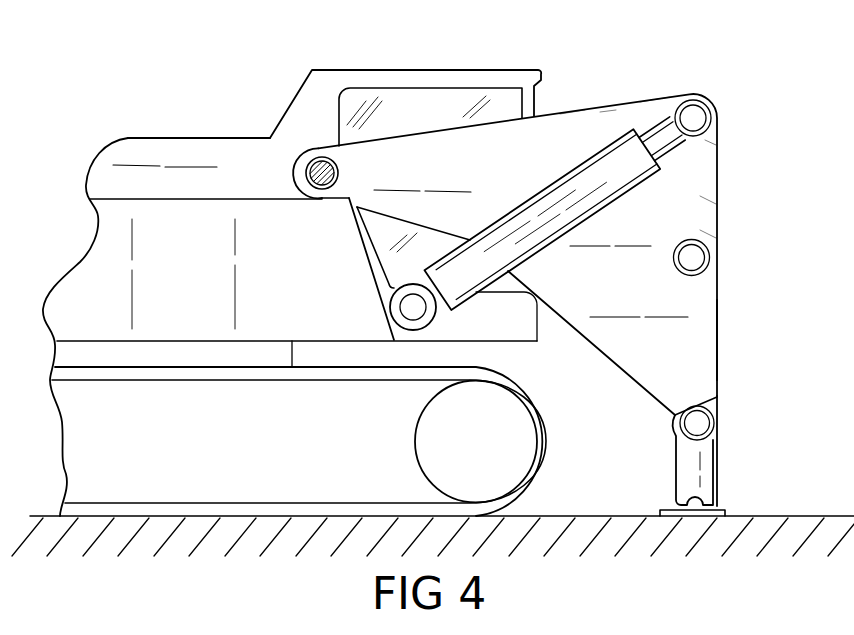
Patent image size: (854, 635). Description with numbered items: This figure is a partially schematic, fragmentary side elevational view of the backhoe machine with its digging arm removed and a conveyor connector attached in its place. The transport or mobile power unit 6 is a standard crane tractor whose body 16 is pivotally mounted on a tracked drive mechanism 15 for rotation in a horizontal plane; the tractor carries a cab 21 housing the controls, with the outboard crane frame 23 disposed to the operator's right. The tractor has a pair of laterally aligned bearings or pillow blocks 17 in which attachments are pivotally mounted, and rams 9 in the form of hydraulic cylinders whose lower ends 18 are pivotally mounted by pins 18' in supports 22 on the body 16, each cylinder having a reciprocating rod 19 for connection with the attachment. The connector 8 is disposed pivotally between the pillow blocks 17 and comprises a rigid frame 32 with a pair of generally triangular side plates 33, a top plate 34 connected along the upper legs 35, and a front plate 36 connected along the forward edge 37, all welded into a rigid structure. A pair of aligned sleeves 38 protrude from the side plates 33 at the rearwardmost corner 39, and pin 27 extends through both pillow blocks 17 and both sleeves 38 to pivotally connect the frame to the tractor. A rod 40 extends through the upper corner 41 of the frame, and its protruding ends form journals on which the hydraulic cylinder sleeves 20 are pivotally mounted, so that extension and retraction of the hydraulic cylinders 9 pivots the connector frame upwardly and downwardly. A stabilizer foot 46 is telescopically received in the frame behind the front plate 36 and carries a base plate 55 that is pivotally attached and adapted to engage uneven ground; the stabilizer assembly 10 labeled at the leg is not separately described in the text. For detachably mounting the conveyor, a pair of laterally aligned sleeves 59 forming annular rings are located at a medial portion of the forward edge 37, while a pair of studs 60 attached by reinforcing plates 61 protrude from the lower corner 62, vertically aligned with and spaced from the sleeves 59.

The transport or mobile power unit 6 is at (351, 66).
The connector 8 is at (571, 128).
The rams 9 is at (539, 208).
The support leg 10 is at (716, 465).
The tracked drive mechanism 15 is at (545, 429).
The body 16 is at (203, 155).
The bearings or pillow blocks 17 is at (299, 195).
The lower ends 18 is at (441, 309).
The pins 18' is at (431, 294).
The reciprocating rod 19 is at (656, 150).
The hydraulic cylinder sleeves 20 is at (716, 110).
The cab 21 is at (404, 98).
The supports 22 is at (391, 289).
The outboard crane frame 23 is at (354, 320).
The pin 27 is at (307, 172).
The rigid frame 32 is at (608, 117).
The side plates 33 is at (705, 234).
The top plate 34 is at (655, 100).
The upper legs 35 is at (432, 148).
The front plate 36 is at (720, 339).
The forward edge 37 is at (703, 200).
The sleeves 38 is at (338, 173).
The rearwardmost corner 39 is at (337, 155).
The rod 40 is at (695, 113).
The upper corner 41 is at (710, 143).
The stabilizer foot 46 is at (683, 459).
The base plate 55 is at (668, 509).
The sleeves 59 is at (710, 260).
The studs 60 is at (715, 426).
The reinforcing plates 61 is at (711, 404).
The lower corner 62 is at (663, 377).